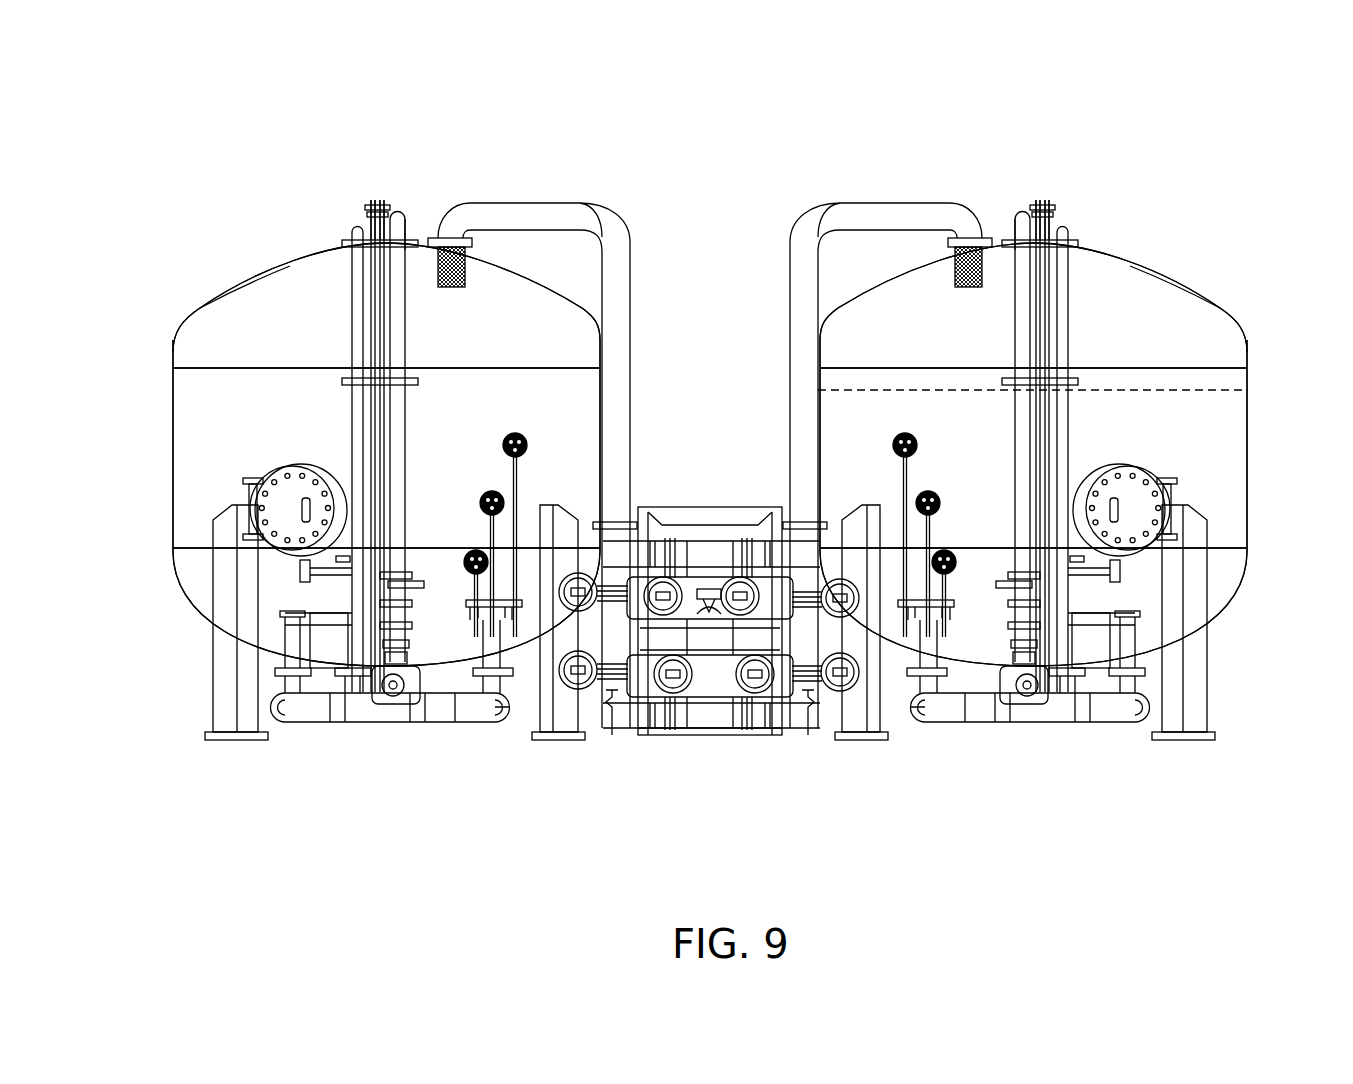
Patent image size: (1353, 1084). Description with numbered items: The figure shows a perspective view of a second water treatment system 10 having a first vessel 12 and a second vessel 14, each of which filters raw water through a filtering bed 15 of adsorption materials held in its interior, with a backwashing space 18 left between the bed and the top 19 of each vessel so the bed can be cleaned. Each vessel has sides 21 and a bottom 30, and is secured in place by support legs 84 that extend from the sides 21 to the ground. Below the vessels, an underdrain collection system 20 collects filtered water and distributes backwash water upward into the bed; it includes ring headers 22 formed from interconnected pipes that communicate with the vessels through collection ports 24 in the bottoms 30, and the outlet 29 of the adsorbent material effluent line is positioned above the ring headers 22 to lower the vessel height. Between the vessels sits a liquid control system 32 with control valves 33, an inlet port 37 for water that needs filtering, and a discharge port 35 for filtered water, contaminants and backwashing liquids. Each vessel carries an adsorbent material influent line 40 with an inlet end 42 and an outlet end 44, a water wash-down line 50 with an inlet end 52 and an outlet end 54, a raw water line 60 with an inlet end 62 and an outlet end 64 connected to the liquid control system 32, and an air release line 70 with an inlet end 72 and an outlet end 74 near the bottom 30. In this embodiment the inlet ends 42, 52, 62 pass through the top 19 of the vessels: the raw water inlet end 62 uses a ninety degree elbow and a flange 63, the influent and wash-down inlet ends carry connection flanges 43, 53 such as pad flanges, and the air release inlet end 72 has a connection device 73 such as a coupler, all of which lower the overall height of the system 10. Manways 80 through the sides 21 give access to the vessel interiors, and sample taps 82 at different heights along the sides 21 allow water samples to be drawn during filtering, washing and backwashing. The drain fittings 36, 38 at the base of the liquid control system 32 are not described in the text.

The water treatment system 10 is at (893, 131).
The first vessel 12 is at (163, 396).
The second vessel 14 is at (1257, 390).
The filtering bed 15 is at (190, 497).
The backwashing space 18 is at (212, 350).
The top 19 is at (290, 262).
The underdrain collection system 20 is at (407, 728).
The sides 21 is at (178, 445).
The ring headers 22 is at (322, 723).
The collection ports 24 is at (283, 683).
The outlet 29 is at (395, 692).
The bottom 30 is at (265, 650).
The liquid control system 32 is at (711, 498).
The control valves 33 is at (750, 536).
The discharge port 35 is at (706, 735).
The drain fitting 36 is at (613, 740).
The inlet port 37 is at (712, 538).
The drain fitting 38 is at (809, 740).
The adsorbent material influent line 40 is at (403, 331).
The inlet end 42 is at (388, 225).
The connection flange 43 is at (410, 236).
The outlet end 44 is at (418, 660).
The water wash-down line 50 is at (358, 405).
The inlet end 52 is at (348, 240).
The connection flange 53 is at (352, 238).
The outlet end 54 is at (284, 690).
The raw water line 60 is at (632, 280).
The inlet end 62 is at (453, 237).
The flange 63 is at (475, 250).
The outlet end 64 is at (618, 519).
The air release line 70 is at (373, 297).
The inlet end 72 is at (372, 228).
The connection device 73 is at (366, 225).
The outlet end 74 is at (375, 690).
The manways 80 is at (282, 490).
The sample taps 82 is at (506, 438).
The support legs 84 is at (220, 540).